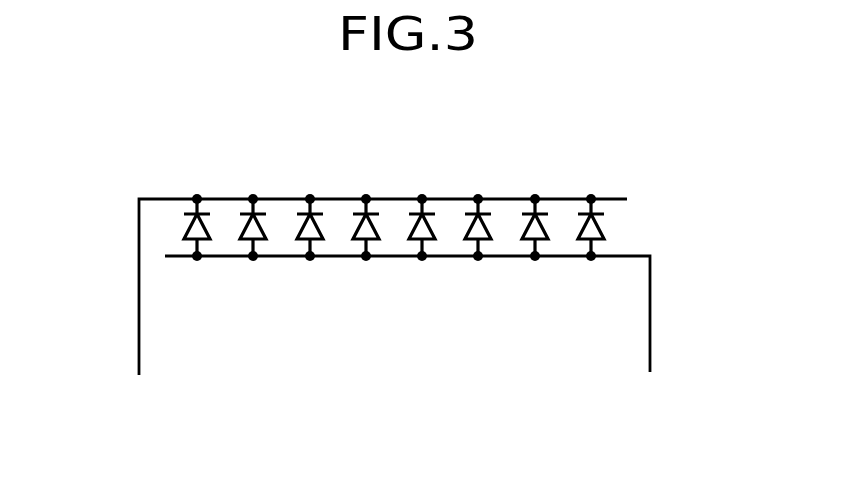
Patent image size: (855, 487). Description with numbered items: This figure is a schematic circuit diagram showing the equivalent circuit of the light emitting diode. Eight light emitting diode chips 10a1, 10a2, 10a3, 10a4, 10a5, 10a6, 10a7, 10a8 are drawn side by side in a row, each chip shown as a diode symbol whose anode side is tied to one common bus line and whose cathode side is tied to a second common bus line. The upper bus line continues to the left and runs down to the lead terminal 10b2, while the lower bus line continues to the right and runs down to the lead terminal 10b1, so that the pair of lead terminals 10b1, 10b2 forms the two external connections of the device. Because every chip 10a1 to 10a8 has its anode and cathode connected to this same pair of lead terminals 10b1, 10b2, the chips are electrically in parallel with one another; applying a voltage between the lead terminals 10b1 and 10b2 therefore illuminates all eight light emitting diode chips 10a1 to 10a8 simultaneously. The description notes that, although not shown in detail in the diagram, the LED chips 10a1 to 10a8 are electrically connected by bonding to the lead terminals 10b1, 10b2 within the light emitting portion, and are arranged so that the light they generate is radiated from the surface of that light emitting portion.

The light emitting diode chip 10a1 is at (206, 230).
The light emitting diode chip 10a2 is at (262, 230).
The light emitting diode chip 10a3 is at (319, 230).
The light emitting diode chip 10a4 is at (375, 230).
The light emitting diode chip 10a5 is at (431, 230).
The light emitting diode chip 10a6 is at (487, 230).
The light emitting diode chip 10a7 is at (544, 230).
The light emitting diode chip 10a8 is at (600, 230).
The lead terminal 10b1 is at (650, 313).
The lead terminal 10b2 is at (139, 332).